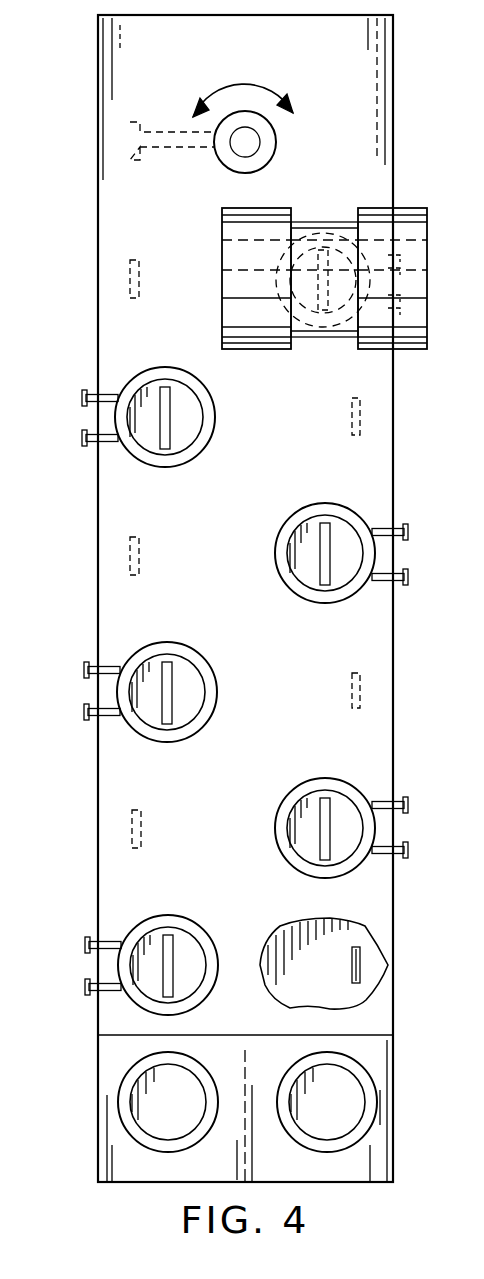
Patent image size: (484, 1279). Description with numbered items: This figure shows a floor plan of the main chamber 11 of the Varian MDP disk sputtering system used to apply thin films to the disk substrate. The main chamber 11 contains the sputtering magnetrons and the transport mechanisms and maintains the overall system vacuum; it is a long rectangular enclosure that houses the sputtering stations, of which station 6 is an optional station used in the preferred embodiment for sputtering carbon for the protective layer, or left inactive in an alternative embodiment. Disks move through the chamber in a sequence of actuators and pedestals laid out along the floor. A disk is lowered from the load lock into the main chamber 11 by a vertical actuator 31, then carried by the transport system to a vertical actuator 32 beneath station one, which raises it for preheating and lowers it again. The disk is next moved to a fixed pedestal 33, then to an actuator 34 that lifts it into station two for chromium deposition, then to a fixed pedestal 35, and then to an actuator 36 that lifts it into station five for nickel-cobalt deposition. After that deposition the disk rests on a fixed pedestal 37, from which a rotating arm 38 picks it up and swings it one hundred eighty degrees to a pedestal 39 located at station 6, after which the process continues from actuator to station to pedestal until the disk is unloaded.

The station 6 is at (413, 222).
The main chamber 11 is at (393, 445).
The vertical actuator 31 is at (135, 1102).
The vertical actuator 32 is at (163, 970).
The fixed pedestal 33 is at (132, 838).
The actuator 34 is at (165, 712).
The fixed pedestal 35 is at (130, 562).
The actuator 36 is at (160, 393).
The fixed pedestal 37 is at (130, 278).
The rotating arm 38 is at (165, 128).
The pedestal 39 is at (339, 250).